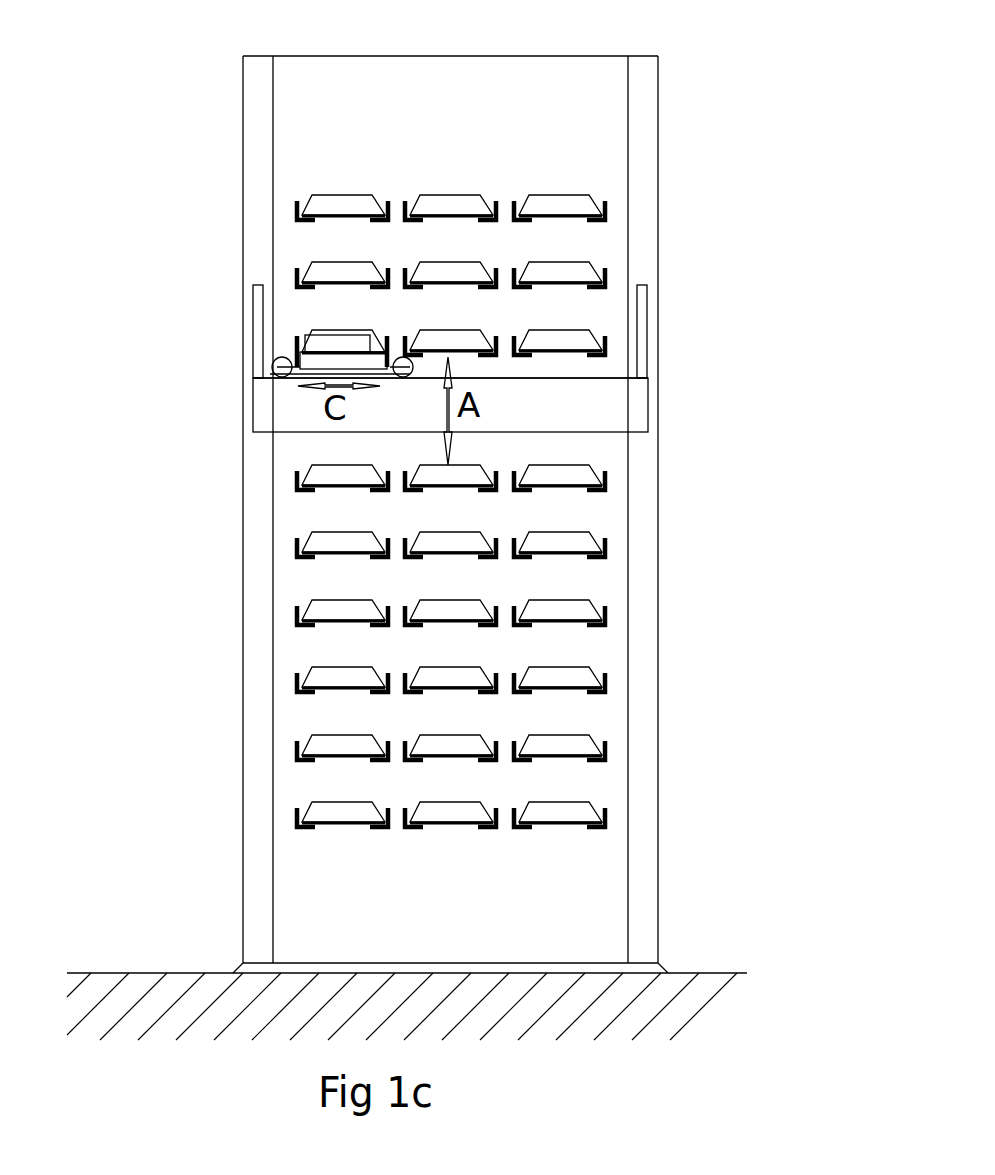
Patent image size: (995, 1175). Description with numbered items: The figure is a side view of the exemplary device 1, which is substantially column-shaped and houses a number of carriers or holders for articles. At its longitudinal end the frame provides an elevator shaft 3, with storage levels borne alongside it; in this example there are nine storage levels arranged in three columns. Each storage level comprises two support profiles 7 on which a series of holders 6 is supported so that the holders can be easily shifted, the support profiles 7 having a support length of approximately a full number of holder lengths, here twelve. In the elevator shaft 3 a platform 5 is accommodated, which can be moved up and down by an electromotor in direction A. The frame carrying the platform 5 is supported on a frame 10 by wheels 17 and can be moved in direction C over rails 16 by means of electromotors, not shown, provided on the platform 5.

The device 1 is at (183, 672).
The elevator shaft 3 is at (460, 72).
The platform 5 is at (338, 360).
The holder 6 is at (570, 207).
The support profile 7 is at (298, 205).
The frame 10 is at (450, 358).
The rail 16 is at (587, 378).
The wheel 17 is at (277, 368).